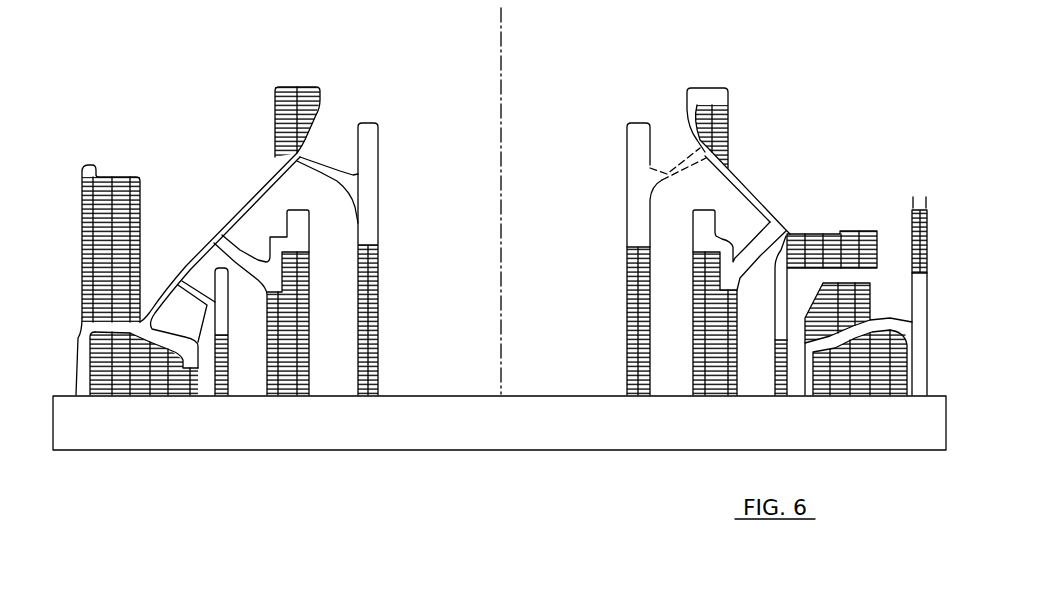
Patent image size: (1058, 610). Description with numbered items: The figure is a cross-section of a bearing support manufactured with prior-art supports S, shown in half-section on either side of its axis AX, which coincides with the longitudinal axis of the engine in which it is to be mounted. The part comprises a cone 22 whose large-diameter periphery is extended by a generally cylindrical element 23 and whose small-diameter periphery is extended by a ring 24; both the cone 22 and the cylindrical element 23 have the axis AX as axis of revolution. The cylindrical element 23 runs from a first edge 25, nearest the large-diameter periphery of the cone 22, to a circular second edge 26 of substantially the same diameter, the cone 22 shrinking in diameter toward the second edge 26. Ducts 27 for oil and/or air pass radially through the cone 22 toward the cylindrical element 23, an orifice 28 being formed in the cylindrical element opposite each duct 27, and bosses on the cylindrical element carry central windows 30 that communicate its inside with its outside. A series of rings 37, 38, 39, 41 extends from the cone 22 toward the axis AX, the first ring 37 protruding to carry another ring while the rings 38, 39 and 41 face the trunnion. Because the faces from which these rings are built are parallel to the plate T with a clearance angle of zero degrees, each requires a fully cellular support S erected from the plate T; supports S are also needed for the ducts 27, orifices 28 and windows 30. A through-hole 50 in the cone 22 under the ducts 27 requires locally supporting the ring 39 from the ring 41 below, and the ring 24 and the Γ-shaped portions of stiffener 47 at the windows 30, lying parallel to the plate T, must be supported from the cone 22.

The cone 22 is at (249, 175).
The cylindrical element 23 is at (912, 200).
The ring 24 is at (702, 87).
The first edge 25 is at (920, 398).
The second edge 26 is at (88, 163).
The duct 27 is at (830, 216).
The orifice 28 is at (934, 247).
The central window 30 is at (68, 238).
The first ring 37 is at (392, 180).
The ring 38 is at (328, 255).
The ring 39 is at (200, 279).
The ring 41 is at (173, 366).
The stiffener 47 is at (128, 177).
The through-hole 50 is at (877, 303).
The axis AX is at (503, 130).
The supports S is at (303, 380).
The plate T is at (499, 423).